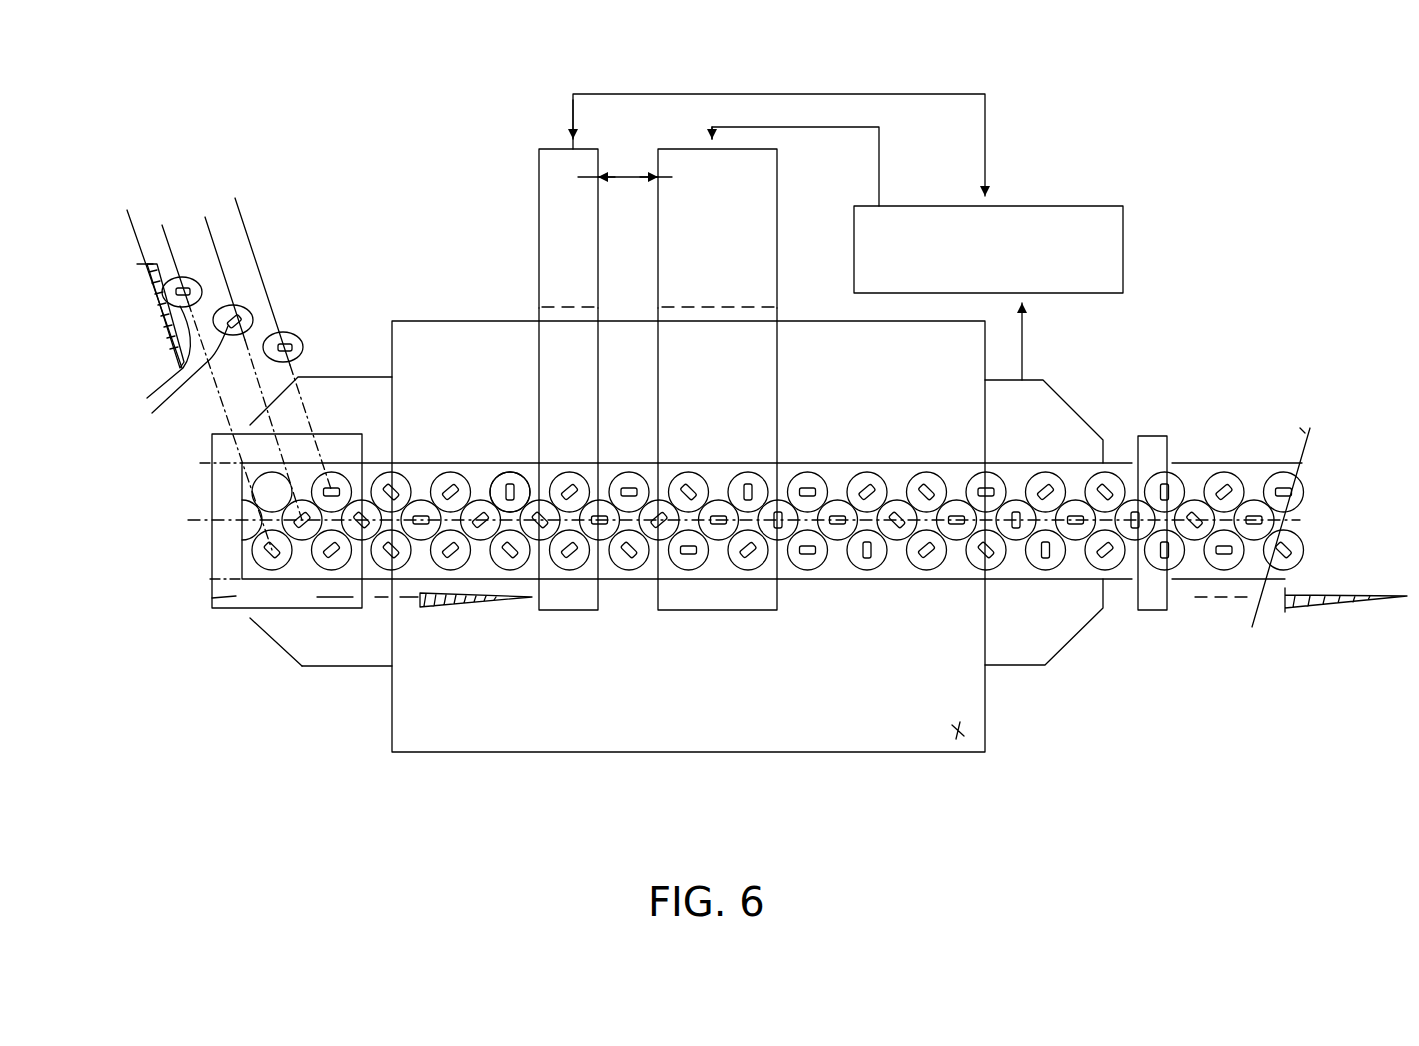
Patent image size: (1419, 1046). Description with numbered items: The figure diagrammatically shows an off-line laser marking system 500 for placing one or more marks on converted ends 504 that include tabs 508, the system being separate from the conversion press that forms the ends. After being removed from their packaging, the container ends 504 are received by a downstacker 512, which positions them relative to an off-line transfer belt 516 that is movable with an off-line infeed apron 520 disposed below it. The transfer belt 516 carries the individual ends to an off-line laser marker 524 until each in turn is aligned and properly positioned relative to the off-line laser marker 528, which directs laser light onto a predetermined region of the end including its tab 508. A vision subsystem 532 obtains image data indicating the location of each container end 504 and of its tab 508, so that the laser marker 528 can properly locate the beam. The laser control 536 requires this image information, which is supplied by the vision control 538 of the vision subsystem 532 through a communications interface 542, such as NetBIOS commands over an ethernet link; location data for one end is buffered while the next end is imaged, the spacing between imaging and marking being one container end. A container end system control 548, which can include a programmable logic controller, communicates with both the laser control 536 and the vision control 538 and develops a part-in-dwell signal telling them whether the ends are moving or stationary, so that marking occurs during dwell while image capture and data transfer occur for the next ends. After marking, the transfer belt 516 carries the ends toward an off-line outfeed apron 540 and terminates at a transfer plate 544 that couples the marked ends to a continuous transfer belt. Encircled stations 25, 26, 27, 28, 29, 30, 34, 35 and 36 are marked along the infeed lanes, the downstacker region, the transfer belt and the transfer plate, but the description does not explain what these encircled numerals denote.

The off-line laser marking system 500 is at (1090, 162).
The converted ends 504 is at (281, 236).
The tabs 508 is at (176, 358).
The downstacker 512 is at (232, 598).
The off-line transfer belt 516 is at (441, 461).
The off-line infeed apron 520 is at (330, 660).
The off-line laser marker 524 is at (918, 722).
The off-line laser marker 528 is at (752, 432).
The vision subsystem 532 is at (562, 348).
The laser control 536 is at (758, 226).
The vision control 538 is at (557, 207).
The off-line outfeed apron 540 is at (1050, 422).
The communications interface 542 is at (620, 176).
The transfer plate 544 is at (1157, 612).
The container end system control 548 is at (1112, 284).
The container end station 25 is at (958, 730).
The container ends in infeed lanes 26 is at (283, 327).
The container end station 27 is at (234, 597).
The container end station 28 is at (294, 645).
The container end station 29 is at (440, 462).
The container end station 30 is at (487, 480).
The container end station 34 is at (1035, 640).
The container end station 35 is at (1153, 600).
The container end station 36 is at (1192, 480).